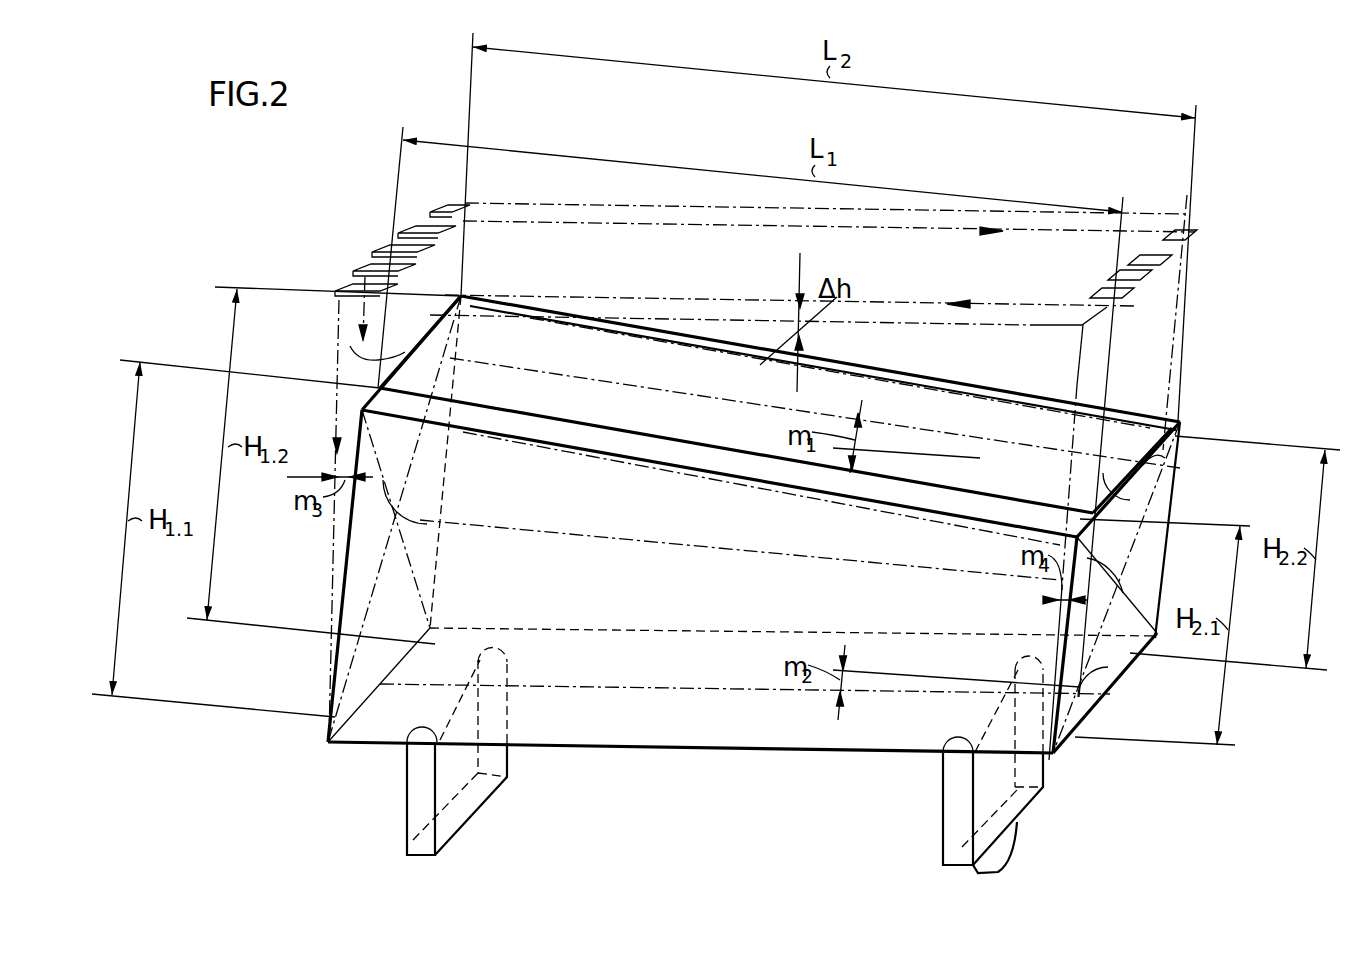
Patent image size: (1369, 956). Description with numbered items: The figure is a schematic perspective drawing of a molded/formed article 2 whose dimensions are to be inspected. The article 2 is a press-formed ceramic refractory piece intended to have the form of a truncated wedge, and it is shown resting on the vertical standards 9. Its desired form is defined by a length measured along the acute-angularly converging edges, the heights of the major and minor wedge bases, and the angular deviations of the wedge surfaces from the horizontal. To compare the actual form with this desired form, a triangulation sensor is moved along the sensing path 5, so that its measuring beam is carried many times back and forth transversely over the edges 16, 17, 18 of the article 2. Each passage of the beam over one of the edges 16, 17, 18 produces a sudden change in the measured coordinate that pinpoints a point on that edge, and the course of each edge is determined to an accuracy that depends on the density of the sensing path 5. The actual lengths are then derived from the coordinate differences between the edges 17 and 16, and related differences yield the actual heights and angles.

The molded/formed article 2 is at (688, 778).
The sensing path 5 is at (358, 270).
The vertical standards 9 is at (418, 793).
The edge 16 is at (1165, 458).
The edge 17 is at (350, 346).
The edge 18 is at (365, 745).